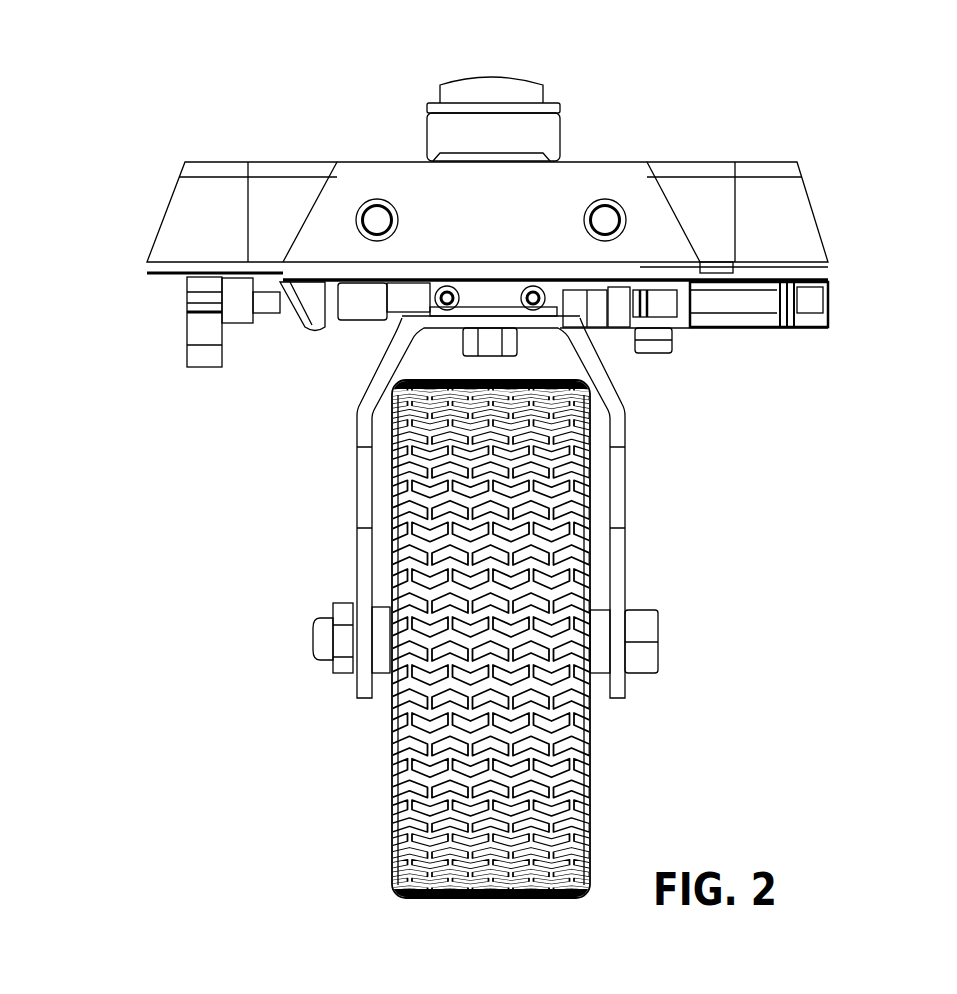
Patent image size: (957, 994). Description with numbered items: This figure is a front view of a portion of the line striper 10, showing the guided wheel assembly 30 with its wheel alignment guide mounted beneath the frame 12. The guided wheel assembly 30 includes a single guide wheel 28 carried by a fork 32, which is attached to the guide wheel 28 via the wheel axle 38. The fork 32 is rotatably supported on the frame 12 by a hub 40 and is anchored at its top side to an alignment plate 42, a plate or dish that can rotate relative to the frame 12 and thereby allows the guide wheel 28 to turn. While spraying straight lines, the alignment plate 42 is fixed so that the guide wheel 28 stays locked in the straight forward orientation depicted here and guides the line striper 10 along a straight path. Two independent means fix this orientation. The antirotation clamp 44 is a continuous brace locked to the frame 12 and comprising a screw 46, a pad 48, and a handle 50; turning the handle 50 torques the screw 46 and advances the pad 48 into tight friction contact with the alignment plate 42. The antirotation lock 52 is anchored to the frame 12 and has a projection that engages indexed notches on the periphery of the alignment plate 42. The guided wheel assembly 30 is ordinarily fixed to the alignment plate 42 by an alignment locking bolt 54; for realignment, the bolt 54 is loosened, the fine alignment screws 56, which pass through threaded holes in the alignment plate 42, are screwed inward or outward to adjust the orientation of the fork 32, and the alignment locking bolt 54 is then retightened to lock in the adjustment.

The line striper 10 is at (813, 88).
The frame 12 is at (792, 227).
The guide wheel 28 is at (592, 770).
The guided wheel assembly 30 is at (340, 860).
The fork 32 is at (625, 515).
The wheel axle 38 is at (315, 637).
The hub 40 is at (557, 120).
The alignment plate 42 is at (473, 343).
The antirotation clamp 44 is at (183, 333).
The screw 46 is at (270, 303).
The pad 48 is at (360, 305).
The handle 50 is at (200, 302).
The antirotation lock 52 is at (703, 332).
The alignment locking bolt 54 is at (402, 298).
The fine alignment screws 56 is at (533, 288).